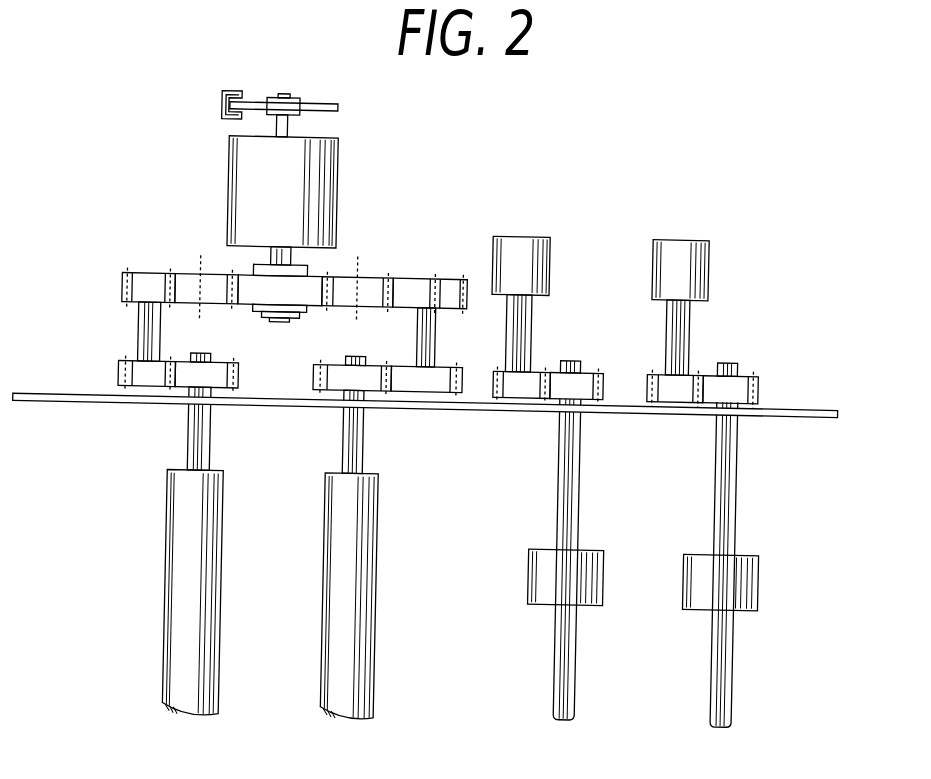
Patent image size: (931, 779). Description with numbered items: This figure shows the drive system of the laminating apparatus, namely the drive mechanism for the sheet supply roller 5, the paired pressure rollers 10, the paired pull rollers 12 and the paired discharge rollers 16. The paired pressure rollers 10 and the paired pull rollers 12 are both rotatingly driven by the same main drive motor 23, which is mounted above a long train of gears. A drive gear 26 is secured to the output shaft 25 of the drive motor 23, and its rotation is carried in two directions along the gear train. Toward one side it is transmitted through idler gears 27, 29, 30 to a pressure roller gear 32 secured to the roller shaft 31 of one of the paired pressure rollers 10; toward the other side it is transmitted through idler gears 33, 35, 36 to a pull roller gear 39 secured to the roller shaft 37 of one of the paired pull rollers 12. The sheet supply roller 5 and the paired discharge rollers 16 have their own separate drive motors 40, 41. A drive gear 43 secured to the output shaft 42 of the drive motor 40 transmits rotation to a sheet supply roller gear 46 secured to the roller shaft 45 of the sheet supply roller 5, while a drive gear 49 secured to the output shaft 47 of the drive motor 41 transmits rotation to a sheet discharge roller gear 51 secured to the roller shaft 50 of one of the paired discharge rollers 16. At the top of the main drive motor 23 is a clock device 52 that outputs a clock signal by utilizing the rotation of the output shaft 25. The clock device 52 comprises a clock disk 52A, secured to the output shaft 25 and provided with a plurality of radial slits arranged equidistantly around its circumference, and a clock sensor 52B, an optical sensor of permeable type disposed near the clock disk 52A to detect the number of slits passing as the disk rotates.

The clock device 52 is at (275, 91).
The clock disk 52A is at (320, 93).
The clock sensor 52B is at (200, 94).
The drive motor 23 is at (316, 193).
The output shaft 25 is at (321, 249).
The drive gear 26 is at (279, 323).
The idler gear 27 is at (379, 311).
The idler gear 29 is at (431, 268).
The idler gear 33 is at (202, 267).
The idler gear 35 is at (140, 261).
The idler gear 36 is at (138, 379).
The roller shaft 37 is at (224, 429).
The pull roller gear 39 is at (221, 373).
The roller shaft 31 is at (324, 417).
The pressure roller gear 32 is at (361, 412).
The idler gear 30 is at (428, 412).
The paired pull rollers 12 is at (217, 593).
The paired pressure rollers 10 is at (374, 596).
The drive motor 41 is at (540, 245).
The output shaft 47 is at (550, 326).
The sheet discharge roller gear 51 is at (587, 356).
The drive gear 49 is at (520, 418).
The roller shaft 50 is at (596, 560).
The paired discharge rollers 16 is at (588, 578).
The drive motor 40 is at (705, 251).
The output shaft 42 is at (711, 330).
The sheet supply roller gear 46 is at (744, 361).
The drive gear 43 is at (674, 422).
The roller shaft 45 is at (749, 565).
The sheet supply roller 5 is at (740, 582).